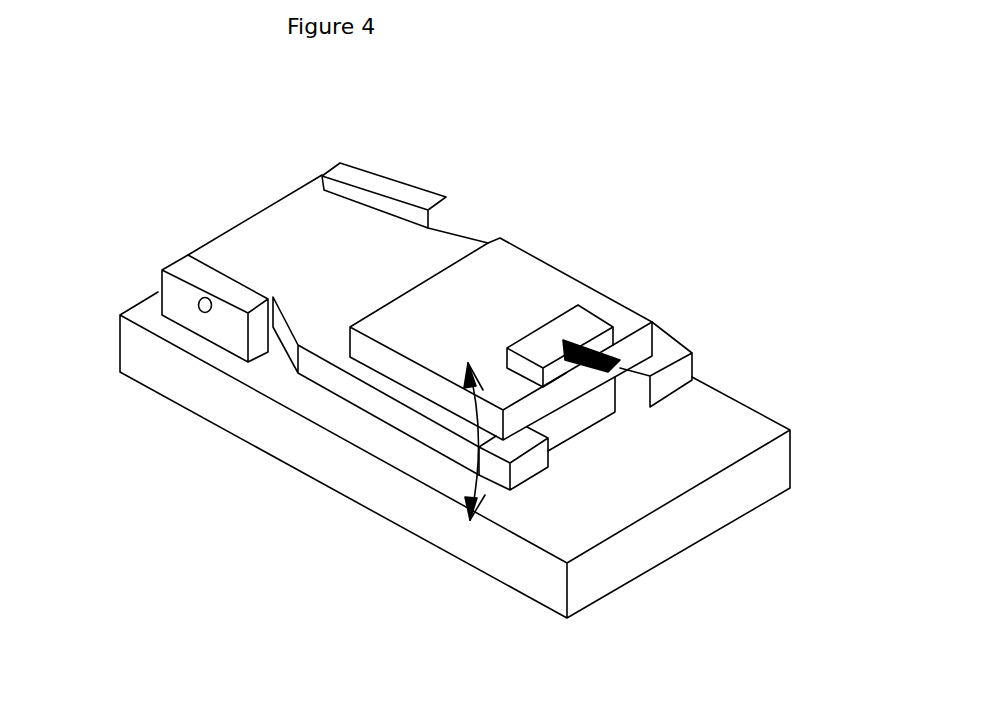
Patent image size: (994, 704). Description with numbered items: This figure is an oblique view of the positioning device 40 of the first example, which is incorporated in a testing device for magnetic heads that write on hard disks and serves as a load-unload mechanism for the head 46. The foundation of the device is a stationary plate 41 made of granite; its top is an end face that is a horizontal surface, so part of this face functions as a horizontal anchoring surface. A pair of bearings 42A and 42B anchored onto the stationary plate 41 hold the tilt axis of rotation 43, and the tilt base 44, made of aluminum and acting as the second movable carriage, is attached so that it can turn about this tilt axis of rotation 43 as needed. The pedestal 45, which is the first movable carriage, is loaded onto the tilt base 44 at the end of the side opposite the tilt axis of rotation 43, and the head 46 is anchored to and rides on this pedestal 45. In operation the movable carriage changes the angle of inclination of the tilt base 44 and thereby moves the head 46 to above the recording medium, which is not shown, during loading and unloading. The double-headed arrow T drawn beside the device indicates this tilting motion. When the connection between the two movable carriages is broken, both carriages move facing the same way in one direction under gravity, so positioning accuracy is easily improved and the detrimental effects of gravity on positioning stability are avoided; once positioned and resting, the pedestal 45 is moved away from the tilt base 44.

The positioning device 40 is at (590, 133).
The stationary plate 41 is at (477, 547).
The bearing 42A is at (187, 275).
The bearing 42B is at (402, 207).
The tilt axis of rotation 43 is at (205, 312).
The tilt base 44 is at (277, 242).
The pedestal 45 is at (507, 297).
The head 46 is at (584, 328).
The tilt direction T is at (490, 458).